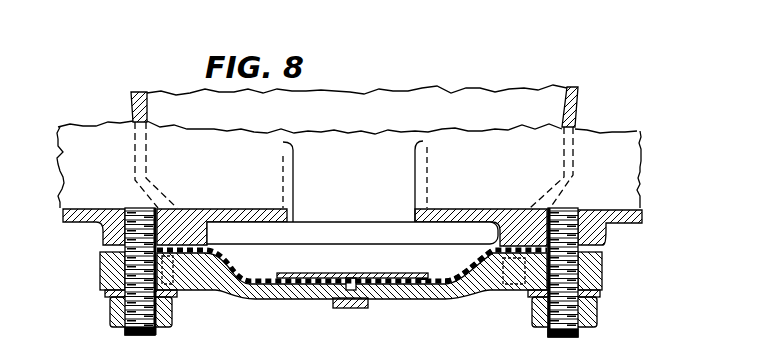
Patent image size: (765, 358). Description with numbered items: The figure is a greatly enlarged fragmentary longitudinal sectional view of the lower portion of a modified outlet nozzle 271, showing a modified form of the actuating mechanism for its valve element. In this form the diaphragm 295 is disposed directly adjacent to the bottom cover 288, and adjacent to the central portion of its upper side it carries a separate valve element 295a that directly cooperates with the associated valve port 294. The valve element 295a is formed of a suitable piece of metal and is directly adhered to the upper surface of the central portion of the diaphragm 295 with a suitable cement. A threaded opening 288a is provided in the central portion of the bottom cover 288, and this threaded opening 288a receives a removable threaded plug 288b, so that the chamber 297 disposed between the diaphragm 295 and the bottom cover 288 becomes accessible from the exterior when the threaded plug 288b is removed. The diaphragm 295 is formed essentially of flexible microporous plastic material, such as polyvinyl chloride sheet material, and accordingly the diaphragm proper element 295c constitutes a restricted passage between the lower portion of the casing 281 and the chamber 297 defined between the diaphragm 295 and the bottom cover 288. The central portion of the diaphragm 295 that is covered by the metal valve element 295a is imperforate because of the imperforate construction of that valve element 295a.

The outlet nozzle 271 is at (91, 229).
The casing 281 is at (579, 114).
The bottom cover 288 is at (241, 299).
The threaded opening 288a is at (322, 296).
The threaded plug 288b is at (359, 306).
The valve port 294 is at (284, 230).
The diaphragm 295 is at (258, 267).
The valve element 295a is at (285, 273).
The diaphragm proper element 295c is at (465, 266).
The chamber 297 is at (422, 284).